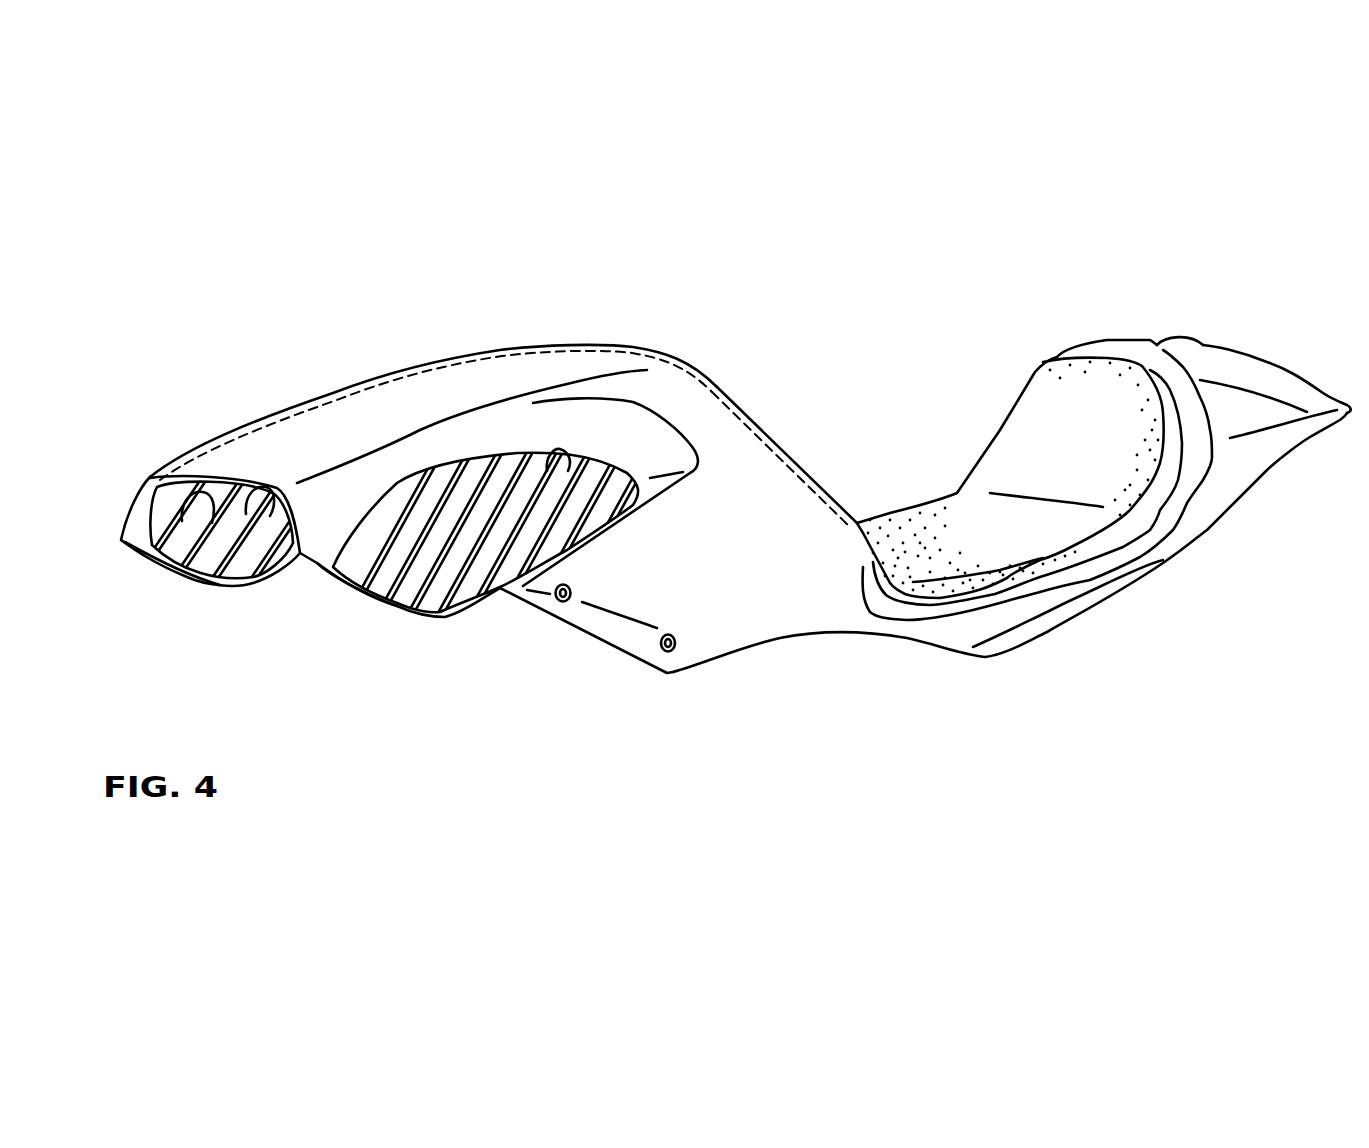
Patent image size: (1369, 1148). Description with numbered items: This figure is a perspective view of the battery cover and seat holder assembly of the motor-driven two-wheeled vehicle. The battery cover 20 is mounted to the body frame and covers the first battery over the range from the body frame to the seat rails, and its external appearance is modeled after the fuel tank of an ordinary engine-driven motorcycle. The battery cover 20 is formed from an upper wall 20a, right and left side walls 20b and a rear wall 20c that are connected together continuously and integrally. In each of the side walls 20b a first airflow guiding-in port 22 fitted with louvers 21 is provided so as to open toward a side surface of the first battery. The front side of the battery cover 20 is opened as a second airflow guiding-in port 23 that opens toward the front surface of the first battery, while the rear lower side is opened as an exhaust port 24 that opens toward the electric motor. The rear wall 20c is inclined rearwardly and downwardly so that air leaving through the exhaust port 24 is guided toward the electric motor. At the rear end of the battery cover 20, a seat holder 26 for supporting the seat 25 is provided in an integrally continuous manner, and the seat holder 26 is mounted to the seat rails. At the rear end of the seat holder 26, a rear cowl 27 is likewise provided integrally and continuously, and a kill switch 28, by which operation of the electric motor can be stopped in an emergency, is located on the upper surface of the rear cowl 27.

The battery cover 20 is at (485, 343).
The upper wall 20a is at (352, 410).
The side wall 20b is at (137, 523).
The rear wall 20c is at (757, 420).
The louvers 21 is at (265, 560).
The first airflow guiding-in port 22 is at (210, 500).
The second airflow guiding-in port 23 is at (277, 487).
The exhaust port 24 is at (750, 647).
The seat 25 is at (927, 527).
The seat holder 26 is at (1050, 607).
The rear cowl 27 is at (1257, 373).
The kill switch 28 is at (1175, 335).